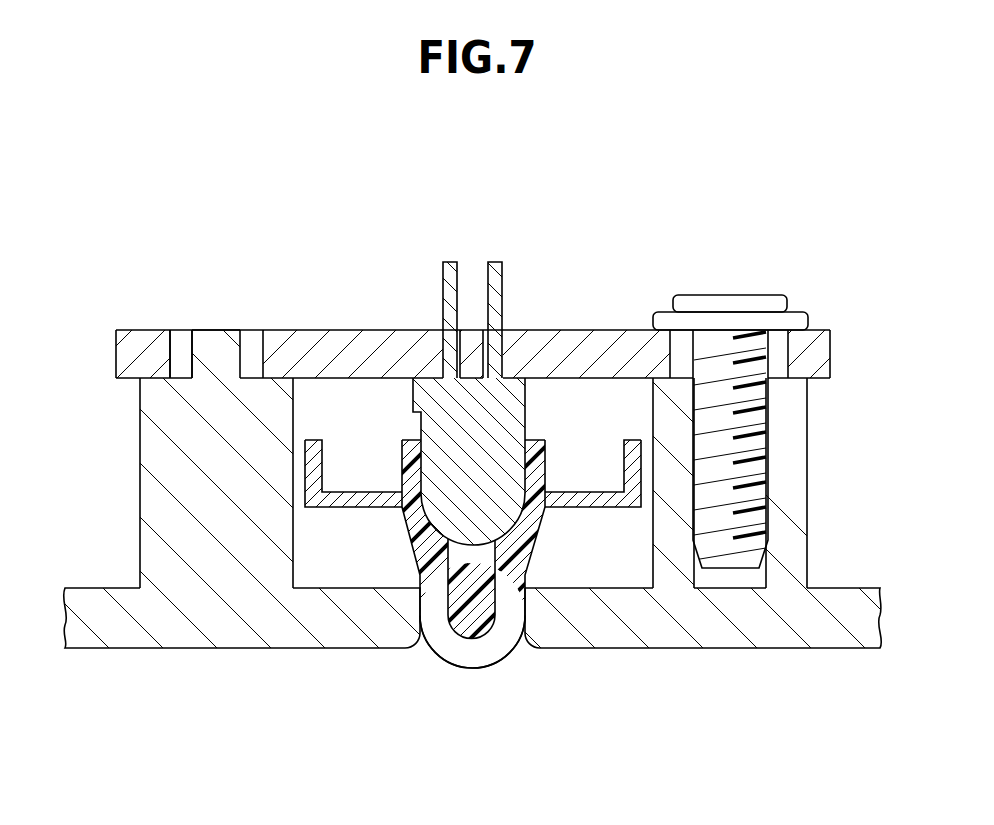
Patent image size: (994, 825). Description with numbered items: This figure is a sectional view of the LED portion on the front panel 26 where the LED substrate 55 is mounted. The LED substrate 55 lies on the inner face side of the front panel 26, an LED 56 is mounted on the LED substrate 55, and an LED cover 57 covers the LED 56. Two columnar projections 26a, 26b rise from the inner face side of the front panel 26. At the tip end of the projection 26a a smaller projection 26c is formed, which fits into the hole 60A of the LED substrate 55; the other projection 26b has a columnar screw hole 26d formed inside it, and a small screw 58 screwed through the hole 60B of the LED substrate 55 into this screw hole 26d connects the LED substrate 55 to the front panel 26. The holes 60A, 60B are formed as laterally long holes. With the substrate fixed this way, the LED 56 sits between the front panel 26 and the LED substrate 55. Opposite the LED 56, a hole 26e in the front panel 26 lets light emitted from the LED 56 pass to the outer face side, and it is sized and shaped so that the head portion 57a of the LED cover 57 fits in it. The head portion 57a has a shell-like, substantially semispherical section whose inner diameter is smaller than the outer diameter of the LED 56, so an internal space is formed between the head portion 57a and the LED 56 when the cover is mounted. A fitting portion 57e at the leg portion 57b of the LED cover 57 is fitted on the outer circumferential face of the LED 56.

The front panel 26 is at (235, 650).
The columnar projection 26a is at (187, 490).
The columnar projection 26b is at (795, 497).
The smaller projection 26c is at (218, 352).
The screw hole 26d is at (768, 449).
The hole 26e is at (440, 627).
The LED substrate 55 is at (358, 330).
The LED 56 is at (451, 262).
The LED cover 57 is at (527, 533).
The head portion 57a is at (488, 668).
The leg portion 57b is at (340, 508).
The fitting portion 57e is at (424, 455).
The small screw 58 is at (723, 297).
The hole 60A is at (178, 342).
The hole 60B is at (776, 345).